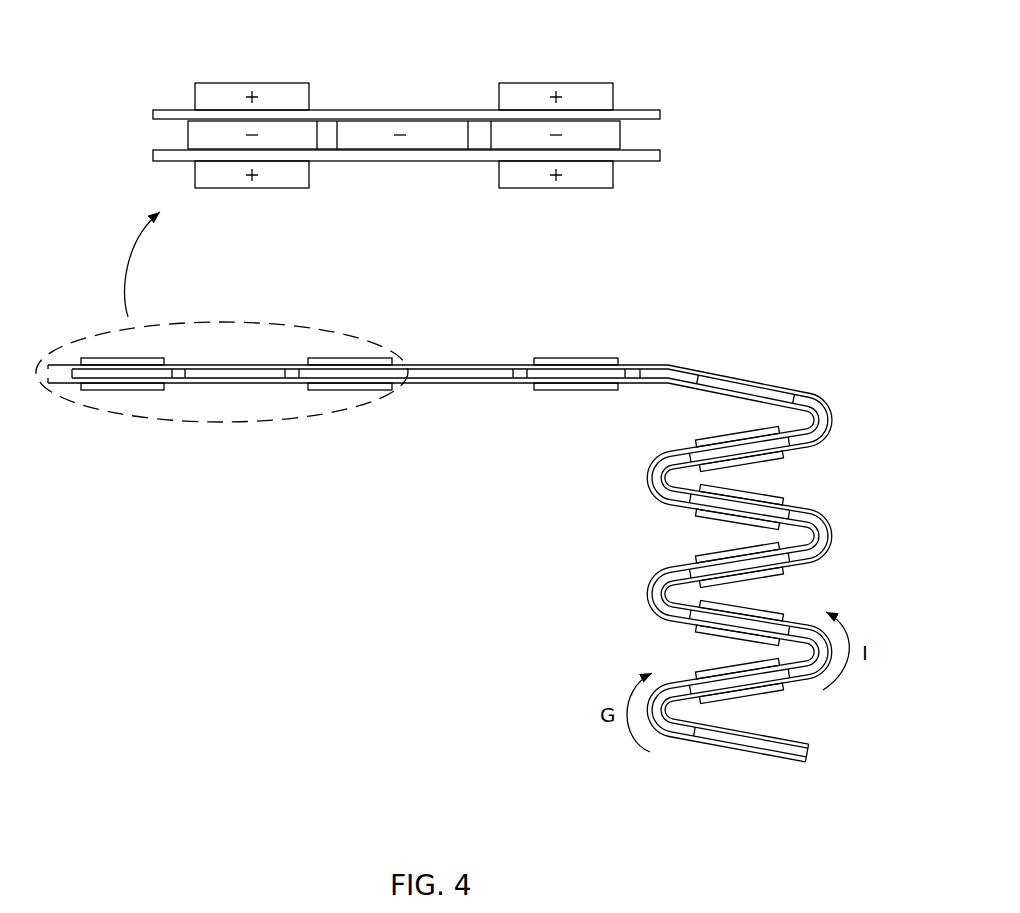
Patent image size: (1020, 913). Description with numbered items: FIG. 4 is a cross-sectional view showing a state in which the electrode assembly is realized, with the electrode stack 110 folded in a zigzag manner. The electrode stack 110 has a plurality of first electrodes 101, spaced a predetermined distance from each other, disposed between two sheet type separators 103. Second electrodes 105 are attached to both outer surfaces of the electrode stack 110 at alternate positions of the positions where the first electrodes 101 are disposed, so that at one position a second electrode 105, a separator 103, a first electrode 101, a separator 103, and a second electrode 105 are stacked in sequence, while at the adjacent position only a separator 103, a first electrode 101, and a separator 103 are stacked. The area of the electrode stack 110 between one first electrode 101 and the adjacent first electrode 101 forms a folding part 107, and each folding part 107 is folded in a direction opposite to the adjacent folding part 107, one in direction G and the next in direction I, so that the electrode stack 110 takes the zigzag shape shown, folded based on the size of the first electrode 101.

The first electrode 101 is at (190, 137).
The separator 103 is at (155, 115).
The second electrode 105 is at (295, 93).
The folding part 107 is at (327, 110).
The electrode stack 110 is at (70, 78).